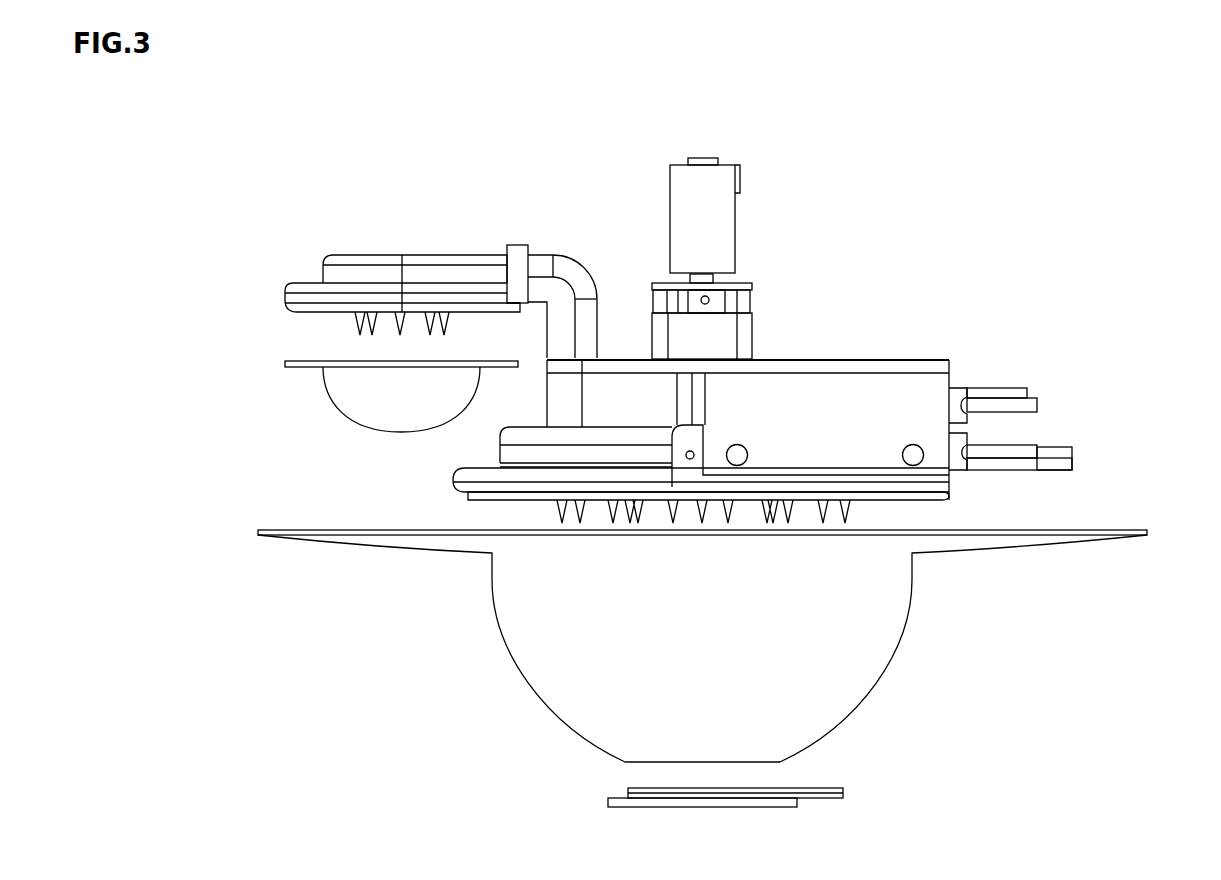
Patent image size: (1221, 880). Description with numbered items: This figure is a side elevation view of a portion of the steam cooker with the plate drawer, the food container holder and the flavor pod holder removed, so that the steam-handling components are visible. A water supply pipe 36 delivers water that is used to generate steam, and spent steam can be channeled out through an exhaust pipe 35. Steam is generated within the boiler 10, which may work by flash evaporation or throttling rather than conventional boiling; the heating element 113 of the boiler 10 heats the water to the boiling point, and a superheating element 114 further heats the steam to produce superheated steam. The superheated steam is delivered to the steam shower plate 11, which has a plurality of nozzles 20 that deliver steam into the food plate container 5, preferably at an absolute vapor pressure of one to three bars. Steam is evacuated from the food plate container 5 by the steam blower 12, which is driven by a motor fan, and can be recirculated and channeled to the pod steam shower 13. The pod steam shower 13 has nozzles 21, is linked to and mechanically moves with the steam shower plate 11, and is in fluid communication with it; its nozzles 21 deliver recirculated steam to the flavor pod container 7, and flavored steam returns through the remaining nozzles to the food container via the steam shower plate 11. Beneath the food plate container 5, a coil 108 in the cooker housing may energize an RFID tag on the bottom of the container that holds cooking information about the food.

The food plate container 5 is at (880, 625).
The flavor pod container 7 is at (353, 399).
The boiler 10 is at (847, 390).
The steam shower plate 11 is at (481, 468).
The steam blower 12 is at (667, 403).
The pod steam shower 13 is at (348, 266).
The nozzles 20 is at (557, 517).
The nozzles 21 is at (357, 326).
The exhaust pipe 35 is at (1017, 388).
The water supply pipe 36 is at (1063, 462).
The coil 108 is at (633, 795).
The heating element 113 is at (1030, 403).
The superheating element 114 is at (1020, 450).